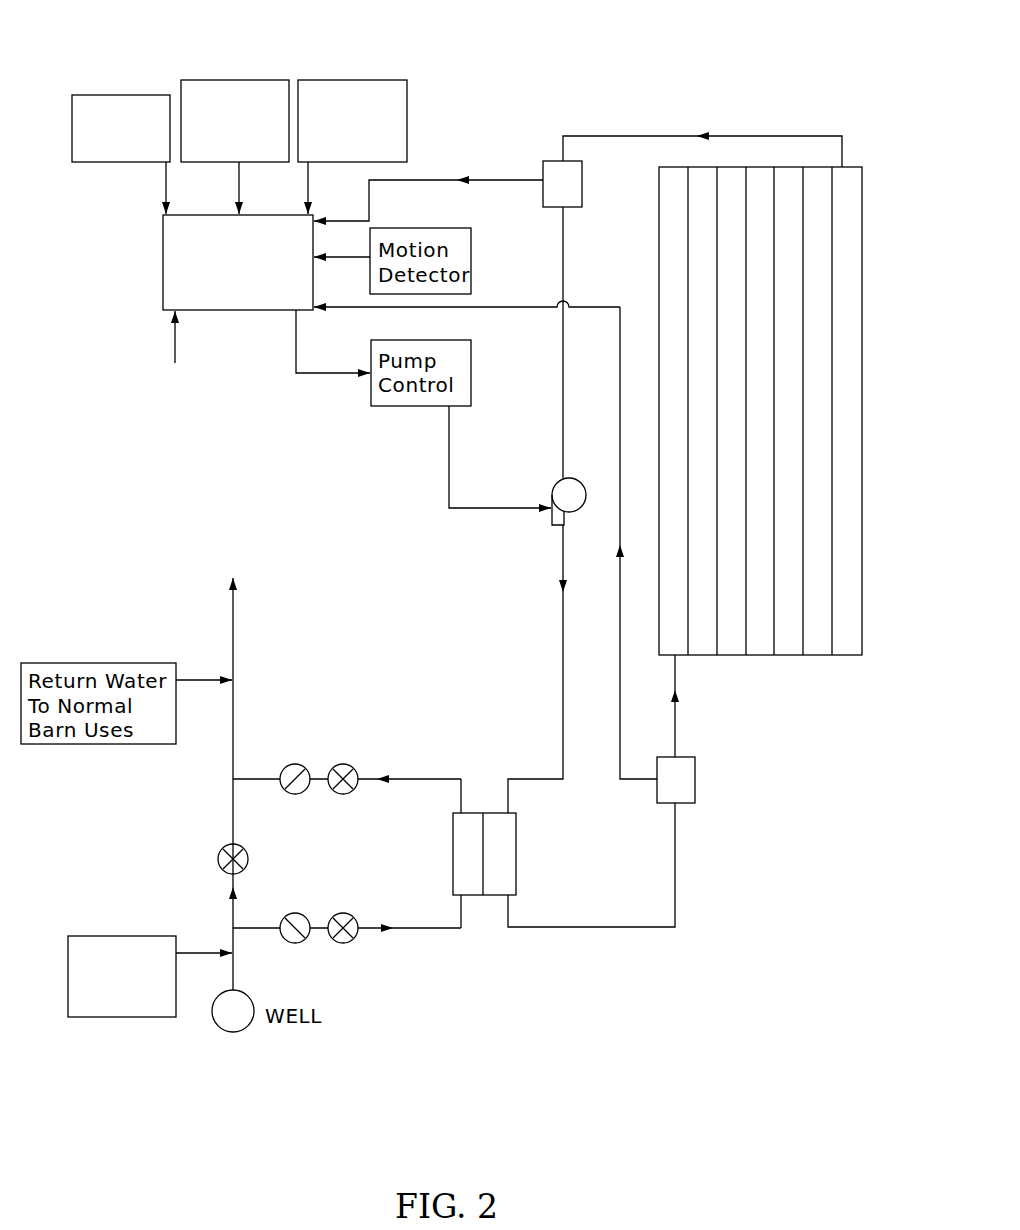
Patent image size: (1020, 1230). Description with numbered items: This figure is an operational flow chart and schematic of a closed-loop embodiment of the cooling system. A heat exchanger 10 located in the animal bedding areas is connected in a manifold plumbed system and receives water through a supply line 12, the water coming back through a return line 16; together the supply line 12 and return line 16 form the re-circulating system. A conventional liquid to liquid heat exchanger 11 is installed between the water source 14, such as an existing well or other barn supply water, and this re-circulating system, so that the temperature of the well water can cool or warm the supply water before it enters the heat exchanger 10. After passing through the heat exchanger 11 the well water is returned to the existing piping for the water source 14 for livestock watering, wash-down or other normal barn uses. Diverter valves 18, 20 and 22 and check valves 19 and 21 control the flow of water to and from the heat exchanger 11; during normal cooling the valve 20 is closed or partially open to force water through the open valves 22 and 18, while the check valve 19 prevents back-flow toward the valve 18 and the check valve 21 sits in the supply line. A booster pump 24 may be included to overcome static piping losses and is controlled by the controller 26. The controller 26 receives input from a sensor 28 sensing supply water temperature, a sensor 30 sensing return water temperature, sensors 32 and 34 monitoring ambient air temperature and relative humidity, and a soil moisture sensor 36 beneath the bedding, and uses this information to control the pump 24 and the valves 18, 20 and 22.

The heat exchanger 10 is at (865, 233).
The liquid to liquid heat exchanger 11 is at (518, 846).
The supply line 12 is at (677, 901).
The water source 14 is at (67, 974).
The return line 16 is at (606, 134).
The diverter valve 18 is at (352, 765).
The check valve 19 is at (305, 764).
The diverter valve 20 is at (217, 848).
The check valve 21 is at (306, 945).
The diverter valve 22 is at (353, 945).
The booster pump 24 is at (550, 489).
The controller 26 is at (233, 313).
The sensor 28 is at (697, 782).
The sensor 30 is at (542, 159).
The ambient air temperature sensor 32 is at (121, 92).
The relative humidity sensor 34 is at (241, 77).
The soil moisture sensor 36 is at (363, 77).